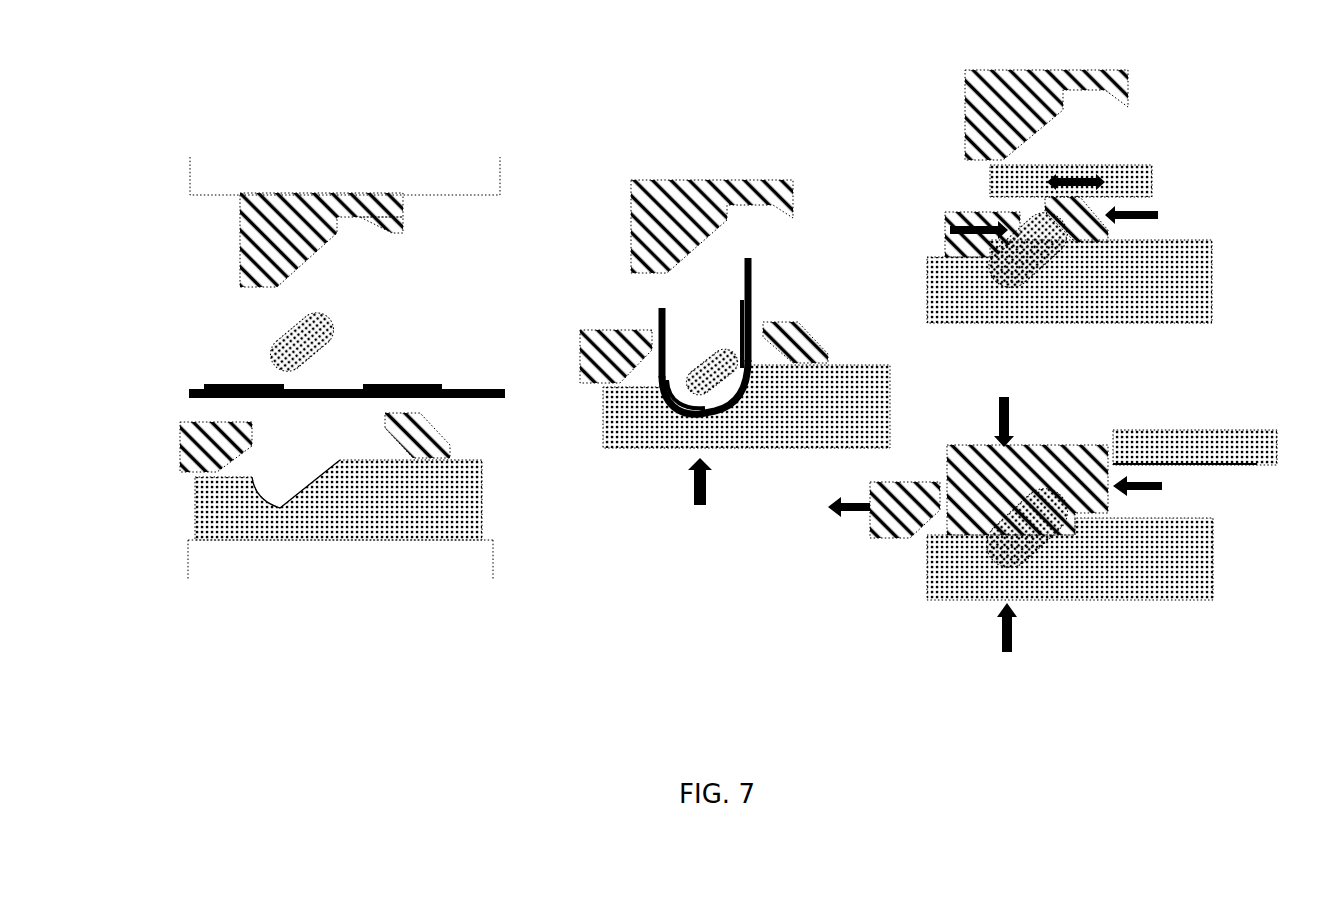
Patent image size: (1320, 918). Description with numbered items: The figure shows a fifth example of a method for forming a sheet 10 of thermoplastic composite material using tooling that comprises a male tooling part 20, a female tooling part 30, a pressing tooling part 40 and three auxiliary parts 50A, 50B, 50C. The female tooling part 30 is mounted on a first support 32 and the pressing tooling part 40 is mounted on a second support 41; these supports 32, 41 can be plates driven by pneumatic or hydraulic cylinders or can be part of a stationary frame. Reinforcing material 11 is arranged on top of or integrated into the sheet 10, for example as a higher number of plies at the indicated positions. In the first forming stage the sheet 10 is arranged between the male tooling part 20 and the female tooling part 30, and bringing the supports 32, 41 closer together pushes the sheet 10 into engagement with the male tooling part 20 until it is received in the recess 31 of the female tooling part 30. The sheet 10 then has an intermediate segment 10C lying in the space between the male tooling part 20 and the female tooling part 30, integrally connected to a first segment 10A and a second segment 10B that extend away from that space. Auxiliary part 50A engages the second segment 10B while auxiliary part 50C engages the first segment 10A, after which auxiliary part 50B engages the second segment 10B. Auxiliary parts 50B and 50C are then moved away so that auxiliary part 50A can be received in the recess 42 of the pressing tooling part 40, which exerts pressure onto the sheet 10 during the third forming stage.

The sheet 10 is at (325, 397).
The first segment 10A is at (667, 328).
The second segment 10B is at (745, 305).
The intermediate segment 10C is at (725, 393).
The reinforcing material 11 is at (407, 387).
The male tooling part 20 is at (292, 333).
The female tooling part 30 is at (468, 507).
The recess 31 is at (287, 508).
The first support 32 is at (448, 618).
The pressing tooling part 40 is at (398, 208).
The second support 41 is at (453, 118).
The recess 42 is at (352, 218).
The auxiliary part 50A is at (443, 443).
The auxiliary part 50B is at (1207, 430).
The auxiliary part 50C is at (207, 462).